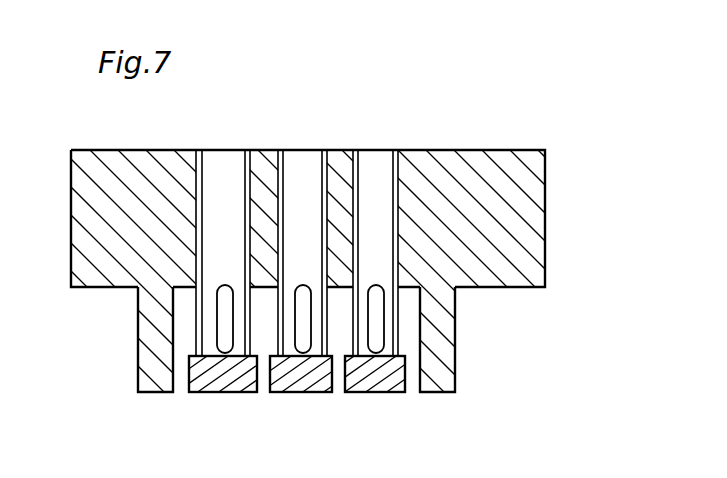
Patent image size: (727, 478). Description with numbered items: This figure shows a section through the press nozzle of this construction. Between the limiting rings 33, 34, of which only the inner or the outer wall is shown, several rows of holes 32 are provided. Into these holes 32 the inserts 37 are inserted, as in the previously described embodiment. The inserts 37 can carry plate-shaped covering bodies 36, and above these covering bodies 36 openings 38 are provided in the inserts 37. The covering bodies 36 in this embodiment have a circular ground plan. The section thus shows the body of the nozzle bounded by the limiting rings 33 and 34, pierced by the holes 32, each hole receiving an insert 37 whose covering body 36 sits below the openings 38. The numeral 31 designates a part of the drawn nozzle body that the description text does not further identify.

The insulating support block 31 is at (493, 165).
The holes 32 is at (368, 162).
The limiting ring 33 is at (147, 325).
The limiting ring 34 is at (433, 372).
The plate-shaped covering body 36 is at (373, 377).
The insert 37 is at (355, 202).
The opening 38 is at (230, 300).